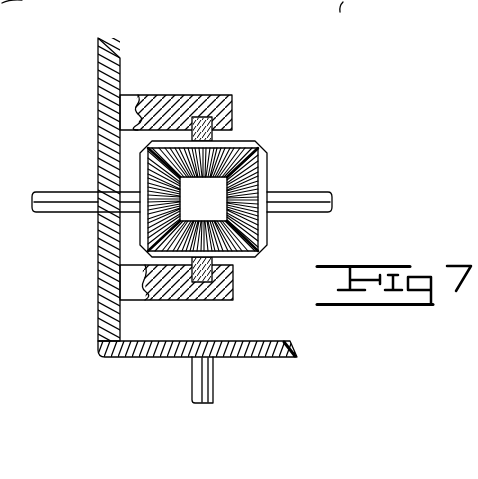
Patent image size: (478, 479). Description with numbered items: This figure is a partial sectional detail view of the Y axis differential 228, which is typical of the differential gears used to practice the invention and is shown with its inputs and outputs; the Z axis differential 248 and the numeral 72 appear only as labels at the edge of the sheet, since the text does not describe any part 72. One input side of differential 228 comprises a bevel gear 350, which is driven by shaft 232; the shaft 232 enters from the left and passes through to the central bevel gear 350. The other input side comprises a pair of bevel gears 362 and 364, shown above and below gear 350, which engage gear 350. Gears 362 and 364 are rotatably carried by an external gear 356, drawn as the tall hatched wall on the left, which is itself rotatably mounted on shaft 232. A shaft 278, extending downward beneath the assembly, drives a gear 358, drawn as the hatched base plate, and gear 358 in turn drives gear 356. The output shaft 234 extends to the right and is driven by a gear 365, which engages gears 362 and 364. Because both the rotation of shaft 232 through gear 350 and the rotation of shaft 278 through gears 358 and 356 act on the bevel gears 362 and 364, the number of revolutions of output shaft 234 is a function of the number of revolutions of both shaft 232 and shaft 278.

The housing 72 is at (13, 17).
The differential 228 is at (217, 80).
The shaft 232 is at (60, 213).
The output shaft 234 is at (330, 192).
The differential 248 is at (352, 21).
The shaft 278 is at (197, 403).
The bevel gear 350 is at (193, 196).
The external gear 356 is at (121, 58).
The gear 358 is at (233, 341).
The bevel gear 362 is at (250, 139).
The bevel gear 364 is at (242, 262).
The gear 365 is at (262, 168).